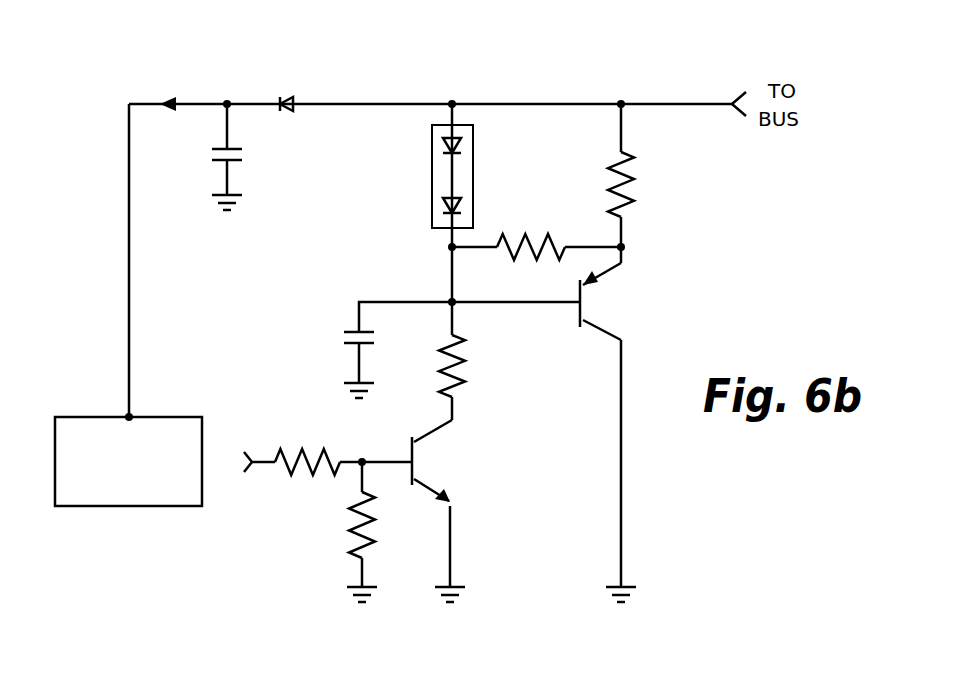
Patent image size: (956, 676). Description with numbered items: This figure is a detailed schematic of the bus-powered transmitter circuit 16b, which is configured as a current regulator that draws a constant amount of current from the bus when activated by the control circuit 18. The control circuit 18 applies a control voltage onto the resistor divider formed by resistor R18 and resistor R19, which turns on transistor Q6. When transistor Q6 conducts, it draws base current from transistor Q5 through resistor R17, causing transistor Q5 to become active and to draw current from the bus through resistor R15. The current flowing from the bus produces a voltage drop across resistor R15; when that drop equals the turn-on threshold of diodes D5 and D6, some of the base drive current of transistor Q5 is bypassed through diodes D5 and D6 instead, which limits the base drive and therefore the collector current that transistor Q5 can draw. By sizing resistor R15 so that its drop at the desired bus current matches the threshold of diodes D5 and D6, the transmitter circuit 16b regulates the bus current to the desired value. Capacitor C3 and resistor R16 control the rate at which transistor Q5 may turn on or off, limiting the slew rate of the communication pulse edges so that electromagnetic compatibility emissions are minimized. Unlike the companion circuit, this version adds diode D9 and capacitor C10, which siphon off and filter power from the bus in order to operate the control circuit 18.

The bus-powered transmitter circuit 16b is at (550, 70).
The control circuit 18 is at (160, 507).
The diode D9 is at (286, 88).
The capacitor C10 is at (202, 157).
The diode D5 is at (433, 176).
The diode D6 is at (427, 209).
The resistor R16 is at (536, 231).
The resistor R15 is at (645, 184).
The transistor Q5 is at (610, 432).
The capacitor C3 is at (378, 350).
The resistor R17 is at (474, 377).
The transistor Q6 is at (404, 511).
The resistor R18 is at (292, 447).
The resistor R19 is at (337, 532).